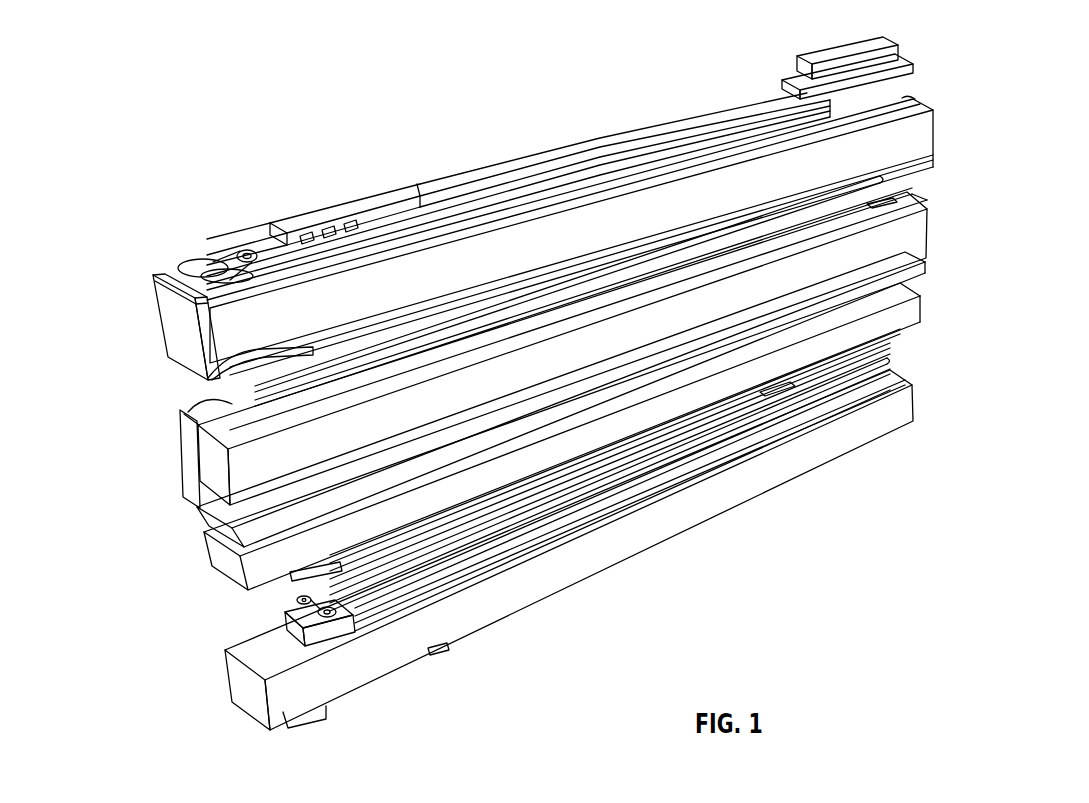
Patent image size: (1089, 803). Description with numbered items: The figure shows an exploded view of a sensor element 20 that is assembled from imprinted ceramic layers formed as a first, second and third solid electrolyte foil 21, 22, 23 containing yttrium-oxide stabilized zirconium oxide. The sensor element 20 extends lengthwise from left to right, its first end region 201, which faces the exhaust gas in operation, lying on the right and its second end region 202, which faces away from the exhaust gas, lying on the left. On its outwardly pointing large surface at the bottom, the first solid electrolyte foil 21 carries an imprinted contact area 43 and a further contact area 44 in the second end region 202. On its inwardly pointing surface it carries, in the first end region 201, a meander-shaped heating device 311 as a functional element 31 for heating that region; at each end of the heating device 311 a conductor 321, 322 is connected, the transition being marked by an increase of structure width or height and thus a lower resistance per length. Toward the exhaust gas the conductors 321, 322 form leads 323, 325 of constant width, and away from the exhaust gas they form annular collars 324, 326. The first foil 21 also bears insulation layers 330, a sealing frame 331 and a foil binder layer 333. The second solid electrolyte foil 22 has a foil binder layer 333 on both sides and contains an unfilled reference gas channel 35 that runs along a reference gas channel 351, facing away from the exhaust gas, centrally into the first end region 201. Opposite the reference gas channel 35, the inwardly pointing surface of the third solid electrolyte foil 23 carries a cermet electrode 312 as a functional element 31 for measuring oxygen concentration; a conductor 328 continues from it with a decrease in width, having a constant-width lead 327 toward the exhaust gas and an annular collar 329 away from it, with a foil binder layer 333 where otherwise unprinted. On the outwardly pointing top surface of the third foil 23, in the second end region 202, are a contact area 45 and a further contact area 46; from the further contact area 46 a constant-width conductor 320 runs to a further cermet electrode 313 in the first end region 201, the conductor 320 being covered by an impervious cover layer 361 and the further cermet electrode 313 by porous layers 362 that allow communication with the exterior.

The sensor element 20 is at (300, 158).
The first solid electrolyte foil 21 is at (898, 407).
The second solid electrolyte foil 22 is at (910, 232).
The third solid electrolyte foil 23 is at (925, 130).
The functional element 31 is at (662, 337).
The meander-shaped heating device 311 is at (887, 362).
The cermet electrode 312 is at (880, 180).
The further cermet electrode 313 is at (905, 100).
The conductor 320 is at (420, 200).
The conductor 321 is at (614, 465).
The conductor 322 is at (610, 500).
The lead 323 is at (757, 410).
The collar 324 is at (300, 598).
The lead 325 is at (693, 447).
The collar 326 is at (295, 640).
The lead 327 is at (440, 191).
The conductor 328 is at (538, 270).
The collar 329 is at (205, 360).
The insulation layers 330 is at (890, 332).
The sealing frame 331 is at (912, 313).
The foil binder layer 333 is at (930, 158).
The reference gas channel 35 is at (213, 400).
The reference gas channel 351 is at (188, 455).
The cover layer 361 is at (655, 135).
The porous layers 362 is at (905, 70).
The contact area 43 is at (361, 727).
The further contact area 44 is at (300, 727).
The contact area 45 is at (200, 262).
The further contact area 46 is at (160, 300).
The first end region 201 is at (866, 450).
The second end region 202 is at (430, 661).